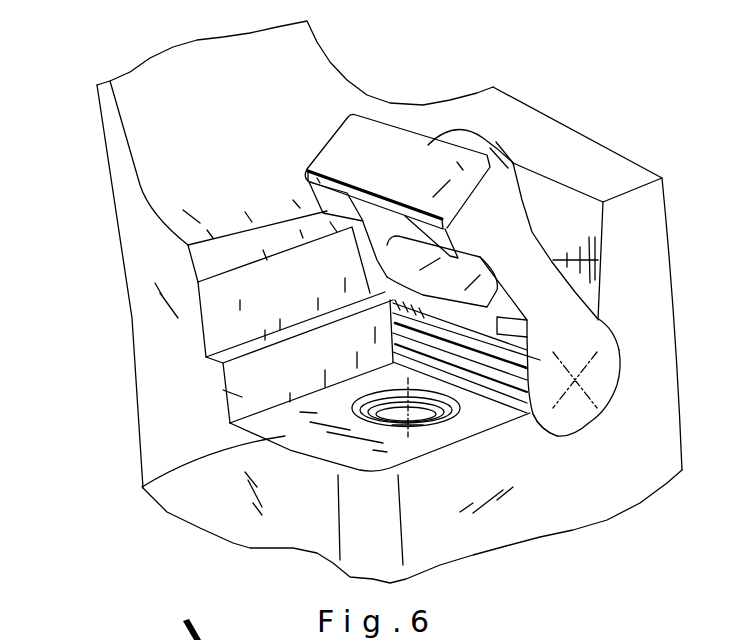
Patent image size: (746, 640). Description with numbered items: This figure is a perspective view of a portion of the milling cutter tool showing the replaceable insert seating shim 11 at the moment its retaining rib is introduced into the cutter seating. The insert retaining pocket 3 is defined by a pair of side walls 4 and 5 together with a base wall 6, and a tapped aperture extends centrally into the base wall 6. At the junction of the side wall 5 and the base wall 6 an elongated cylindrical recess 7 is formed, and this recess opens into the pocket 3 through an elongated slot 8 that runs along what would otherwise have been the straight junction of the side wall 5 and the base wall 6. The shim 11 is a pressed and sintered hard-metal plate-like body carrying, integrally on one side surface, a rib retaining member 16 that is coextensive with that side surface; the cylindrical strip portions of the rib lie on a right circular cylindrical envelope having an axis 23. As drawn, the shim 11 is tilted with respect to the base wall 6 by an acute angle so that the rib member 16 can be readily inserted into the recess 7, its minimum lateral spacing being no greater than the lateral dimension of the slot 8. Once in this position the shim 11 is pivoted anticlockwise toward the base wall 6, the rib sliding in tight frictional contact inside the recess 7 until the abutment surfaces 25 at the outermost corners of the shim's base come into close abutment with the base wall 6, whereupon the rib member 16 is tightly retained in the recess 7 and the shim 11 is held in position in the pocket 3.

The insert retaining pocket 3 is at (240, 503).
The side wall 4 is at (240, 398).
The side wall 5 is at (593, 292).
The base wall 6 is at (142, 487).
The elongated cylindrical recess 7 is at (610, 332).
The elongated slot 8 is at (503, 405).
The insert seating shim 11 is at (392, 158).
The rib retaining member 16 is at (602, 372).
The axis 23 is at (625, 397).
The abutment surfaces 25 is at (327, 187).